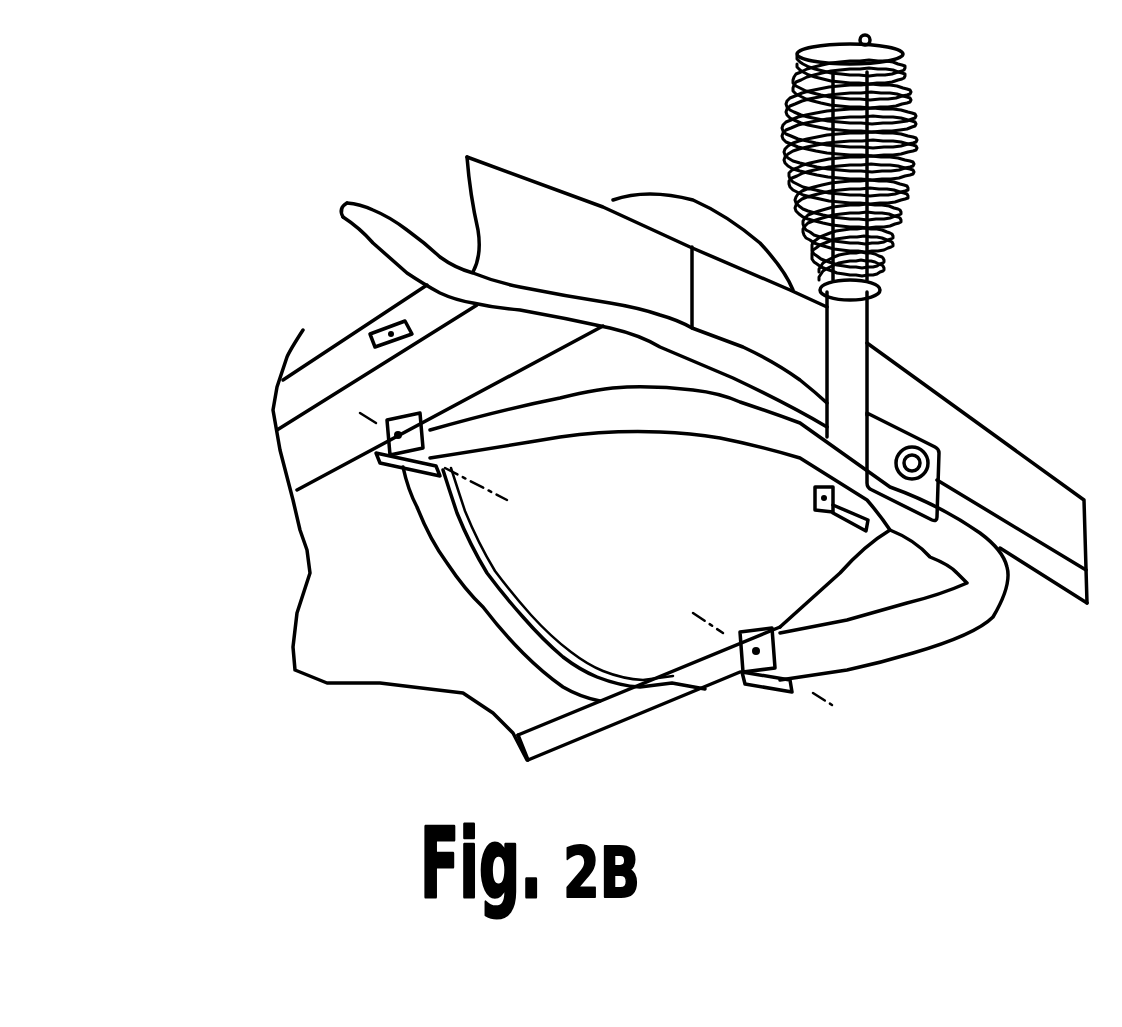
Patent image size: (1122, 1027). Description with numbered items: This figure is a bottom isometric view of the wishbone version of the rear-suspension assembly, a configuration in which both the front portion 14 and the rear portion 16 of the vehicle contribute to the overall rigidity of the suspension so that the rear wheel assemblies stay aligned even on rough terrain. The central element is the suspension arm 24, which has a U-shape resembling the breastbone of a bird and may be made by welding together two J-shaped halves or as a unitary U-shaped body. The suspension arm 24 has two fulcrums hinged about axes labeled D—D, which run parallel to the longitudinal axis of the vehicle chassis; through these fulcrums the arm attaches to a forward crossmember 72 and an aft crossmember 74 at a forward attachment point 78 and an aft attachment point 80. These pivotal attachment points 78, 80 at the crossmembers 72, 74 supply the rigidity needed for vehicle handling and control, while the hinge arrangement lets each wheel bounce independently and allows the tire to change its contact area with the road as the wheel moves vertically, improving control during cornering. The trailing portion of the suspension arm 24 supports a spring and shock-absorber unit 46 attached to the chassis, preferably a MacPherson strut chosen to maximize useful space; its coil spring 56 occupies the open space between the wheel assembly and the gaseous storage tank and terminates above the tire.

The front portion 14 is at (538, 307).
The rear portion 16 is at (777, 442).
The suspension arm 24 is at (712, 438).
The spring and shock-absorber unit 46 is at (778, 110).
The coil spring 56 is at (920, 130).
The forward crossmember 72 is at (330, 370).
The aft crossmember 74 is at (595, 729).
The forward attachment point 78 is at (390, 452).
The aft attachment point 80 is at (795, 688).